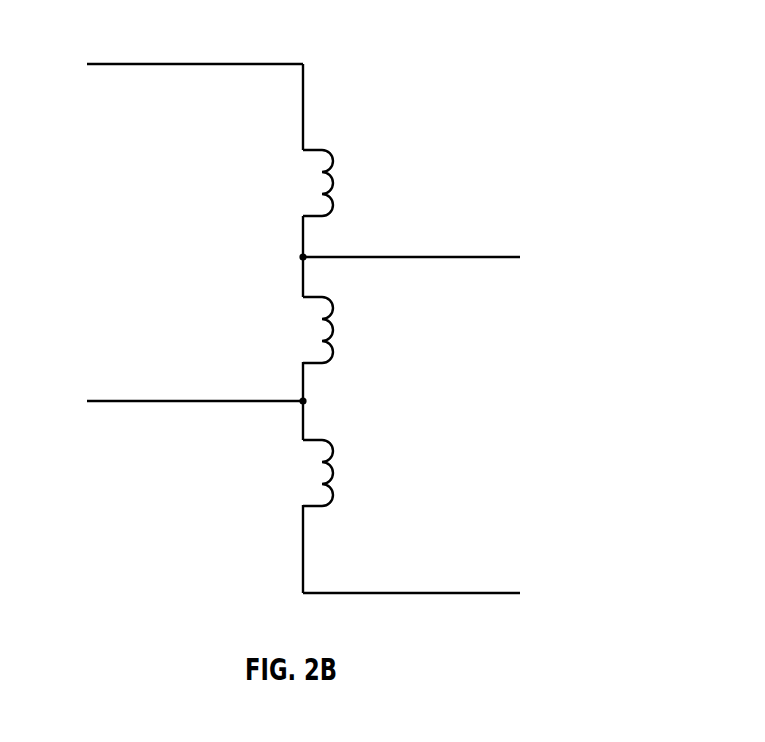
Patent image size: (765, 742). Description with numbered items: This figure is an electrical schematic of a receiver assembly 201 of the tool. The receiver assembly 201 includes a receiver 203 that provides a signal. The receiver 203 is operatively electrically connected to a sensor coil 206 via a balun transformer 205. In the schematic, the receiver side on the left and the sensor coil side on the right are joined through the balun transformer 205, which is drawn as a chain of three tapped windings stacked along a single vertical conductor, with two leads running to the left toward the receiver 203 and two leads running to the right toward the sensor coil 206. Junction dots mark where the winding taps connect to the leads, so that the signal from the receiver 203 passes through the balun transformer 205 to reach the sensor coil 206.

The receiver assembly 201 is at (387, 53).
The receiver 203 is at (154, 162).
The balun transformer 205 is at (432, 165).
The sensor coil 206 is at (434, 525).